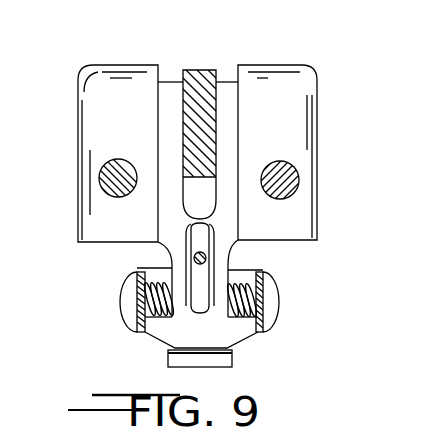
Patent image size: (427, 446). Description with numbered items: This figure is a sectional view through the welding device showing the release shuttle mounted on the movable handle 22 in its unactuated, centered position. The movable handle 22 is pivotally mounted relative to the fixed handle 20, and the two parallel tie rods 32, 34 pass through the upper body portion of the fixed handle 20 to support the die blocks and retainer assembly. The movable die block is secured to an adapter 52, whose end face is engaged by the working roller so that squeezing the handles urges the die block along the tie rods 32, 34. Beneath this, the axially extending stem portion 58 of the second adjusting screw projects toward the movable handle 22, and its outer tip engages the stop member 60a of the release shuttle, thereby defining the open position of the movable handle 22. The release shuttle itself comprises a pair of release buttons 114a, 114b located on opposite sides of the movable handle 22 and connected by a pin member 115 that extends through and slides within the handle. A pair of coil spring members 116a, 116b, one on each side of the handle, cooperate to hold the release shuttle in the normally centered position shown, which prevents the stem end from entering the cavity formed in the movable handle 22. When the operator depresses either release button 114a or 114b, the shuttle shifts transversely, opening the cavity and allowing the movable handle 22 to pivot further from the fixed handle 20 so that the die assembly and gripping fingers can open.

The fixed handle 20 is at (320, 71).
The movable handle 22 is at (233, 352).
The tie rod 32 is at (297, 171).
The tie rod 34 is at (99, 180).
The adapter 52 is at (201, 70).
The stem portion 58 is at (172, 257).
The stop member 60a is at (228, 257).
The release button 114a is at (275, 317).
The release button 114b is at (128, 326).
The pin member 115 is at (263, 273).
The coil spring member 116a is at (277, 292).
The coil spring member 116b is at (120, 300).